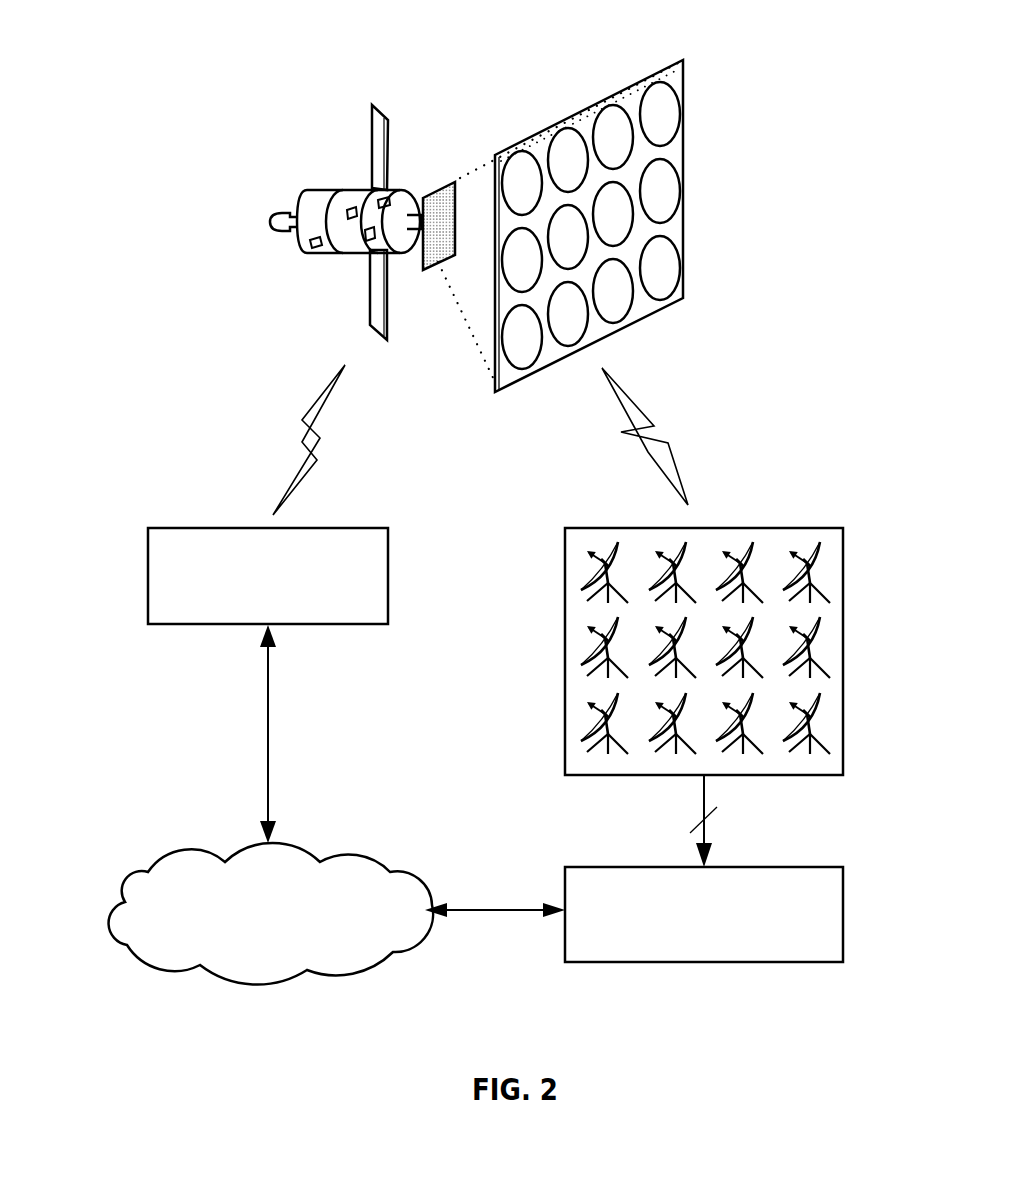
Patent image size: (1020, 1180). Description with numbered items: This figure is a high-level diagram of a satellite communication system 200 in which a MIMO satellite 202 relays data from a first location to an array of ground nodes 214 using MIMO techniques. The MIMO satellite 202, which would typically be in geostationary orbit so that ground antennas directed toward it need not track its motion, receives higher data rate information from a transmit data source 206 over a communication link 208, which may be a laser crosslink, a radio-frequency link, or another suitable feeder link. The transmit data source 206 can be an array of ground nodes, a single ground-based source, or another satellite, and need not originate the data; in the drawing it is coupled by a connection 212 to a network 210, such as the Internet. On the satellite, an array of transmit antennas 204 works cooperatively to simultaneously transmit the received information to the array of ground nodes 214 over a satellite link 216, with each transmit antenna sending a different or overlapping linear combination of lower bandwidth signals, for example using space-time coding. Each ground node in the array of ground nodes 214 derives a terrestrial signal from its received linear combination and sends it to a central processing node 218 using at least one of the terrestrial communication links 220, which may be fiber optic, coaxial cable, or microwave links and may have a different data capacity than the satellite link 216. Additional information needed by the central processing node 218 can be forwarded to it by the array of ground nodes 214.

The satellite communication system 200 is at (485, 25).
The MIMO satellite 202 is at (303, 190).
The array of transmit antennas 204 is at (550, 123).
The transmit data source 206 is at (145, 580).
The communication link 208 is at (288, 440).
The network 210 is at (110, 882).
The network connection 212 is at (263, 757).
The array of ground nodes 214 is at (562, 603).
The satellite link 216 is at (653, 412).
The central processing node 218 is at (847, 908).
The terrestrial communication links 220 is at (712, 830).